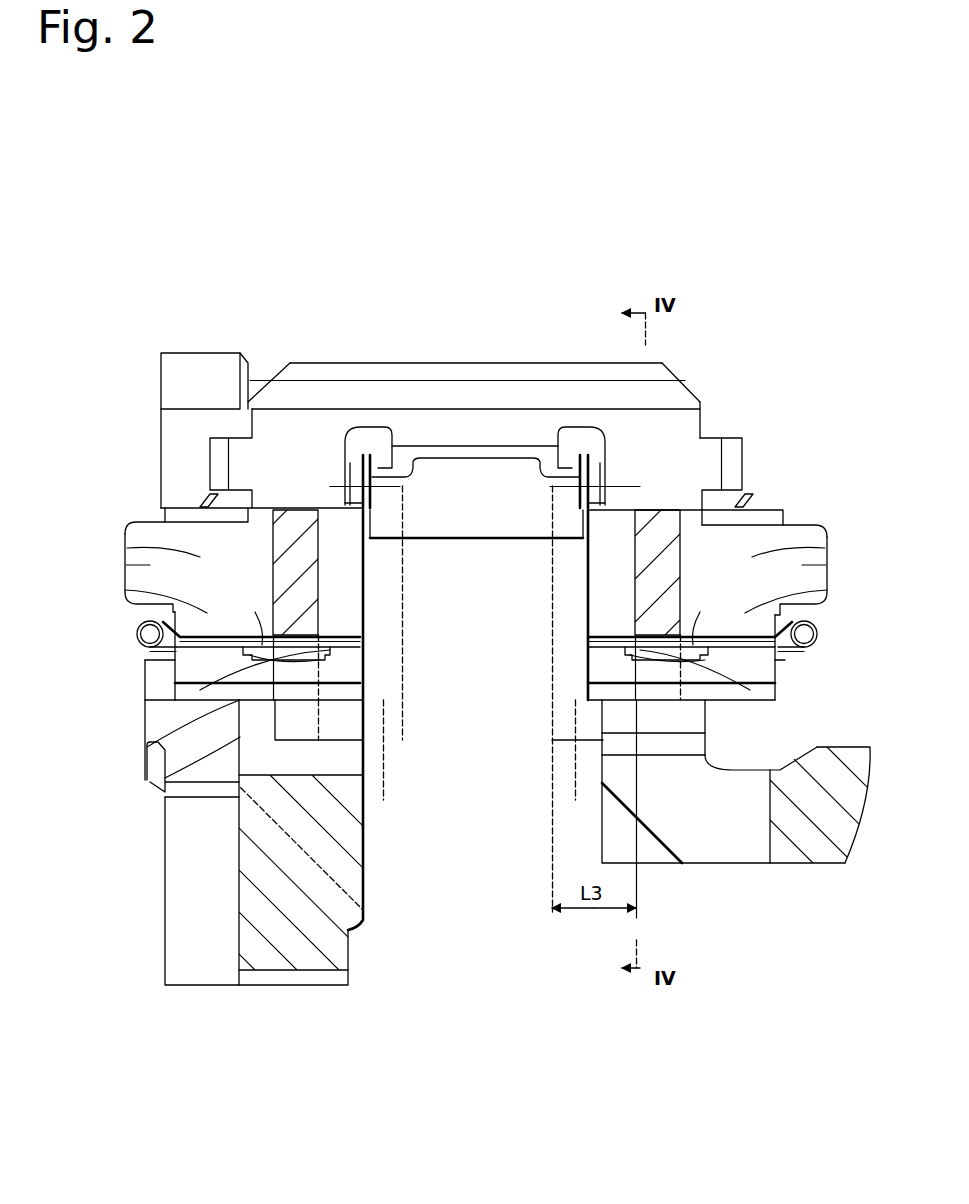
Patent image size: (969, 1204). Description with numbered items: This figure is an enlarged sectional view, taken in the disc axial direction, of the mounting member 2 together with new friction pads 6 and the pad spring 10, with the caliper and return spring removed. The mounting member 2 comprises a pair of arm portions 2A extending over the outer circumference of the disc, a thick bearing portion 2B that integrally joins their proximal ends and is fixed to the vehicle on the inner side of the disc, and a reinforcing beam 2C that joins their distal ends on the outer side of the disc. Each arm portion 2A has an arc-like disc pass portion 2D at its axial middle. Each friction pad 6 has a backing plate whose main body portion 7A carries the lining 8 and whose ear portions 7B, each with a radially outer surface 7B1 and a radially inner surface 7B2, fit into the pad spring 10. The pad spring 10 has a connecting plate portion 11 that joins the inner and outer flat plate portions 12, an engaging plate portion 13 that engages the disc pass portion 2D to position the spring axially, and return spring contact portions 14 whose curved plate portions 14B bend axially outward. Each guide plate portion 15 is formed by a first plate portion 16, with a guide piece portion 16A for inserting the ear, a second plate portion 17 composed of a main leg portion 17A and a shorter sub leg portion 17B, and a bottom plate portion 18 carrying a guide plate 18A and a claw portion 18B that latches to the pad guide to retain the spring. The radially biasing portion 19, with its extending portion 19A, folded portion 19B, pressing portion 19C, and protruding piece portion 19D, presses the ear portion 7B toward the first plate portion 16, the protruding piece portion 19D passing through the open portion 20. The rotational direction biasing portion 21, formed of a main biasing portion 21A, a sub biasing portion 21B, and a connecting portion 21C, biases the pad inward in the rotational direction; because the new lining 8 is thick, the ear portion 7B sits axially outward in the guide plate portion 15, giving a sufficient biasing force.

The mounting member 2 is at (727, 866).
The arm portion 2A is at (192, 385).
The bearing portion 2B is at (300, 930).
The reinforcing beam 2C is at (795, 825).
The disc pass portion 2D is at (483, 470).
The friction pad 6 is at (296, 503).
The main body portion 7A is at (172, 796).
The ear portion 7B is at (306, 540).
The radially outer surface 7B1 is at (288, 520).
The radially inner surface 7B2 is at (310, 655).
The lining 8 is at (479, 762).
The pad spring 10 is at (462, 361).
The connecting plate portion 11 is at (405, 400).
The flat plate portion 12 is at (290, 455).
The engaging plate portion 13 is at (437, 455).
The return spring contact portion 14 is at (228, 450).
The curved plate portion 14B is at (220, 468).
The guide plate portion 15 is at (350, 592).
The first plate portion 16 is at (165, 518).
The guide piece portion 16A is at (205, 500).
The second plate portion 17 is at (175, 620).
The main leg portion 17A is at (150, 623).
The sub leg portion 17B is at (330, 647).
The bottom plate portion 18 is at (150, 553).
The guide plate 18A is at (150, 578).
The claw portion 18B is at (310, 705).
The radially biasing portion 19 is at (132, 658).
The extending portion 19A is at (140, 680).
The folded portion 19B is at (138, 641).
The pressing portion 19C is at (322, 637).
The protruding piece portion 19D is at (258, 640).
The open portion 20 is at (190, 720).
The rotational direction biasing portion 21 is at (215, 735).
The main biasing portion 21A is at (210, 690).
The sub biasing portion 21B is at (320, 690).
The connecting portion 21C is at (175, 780).